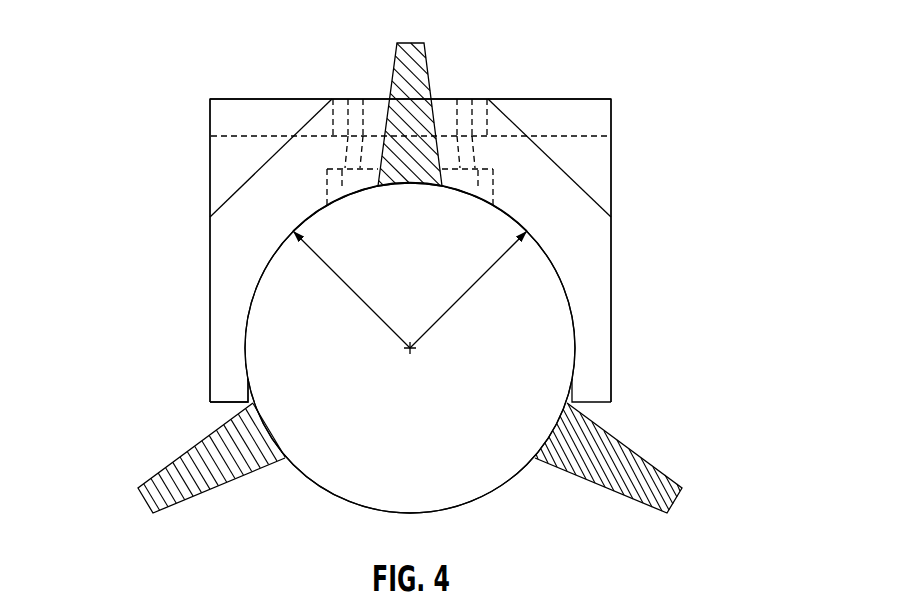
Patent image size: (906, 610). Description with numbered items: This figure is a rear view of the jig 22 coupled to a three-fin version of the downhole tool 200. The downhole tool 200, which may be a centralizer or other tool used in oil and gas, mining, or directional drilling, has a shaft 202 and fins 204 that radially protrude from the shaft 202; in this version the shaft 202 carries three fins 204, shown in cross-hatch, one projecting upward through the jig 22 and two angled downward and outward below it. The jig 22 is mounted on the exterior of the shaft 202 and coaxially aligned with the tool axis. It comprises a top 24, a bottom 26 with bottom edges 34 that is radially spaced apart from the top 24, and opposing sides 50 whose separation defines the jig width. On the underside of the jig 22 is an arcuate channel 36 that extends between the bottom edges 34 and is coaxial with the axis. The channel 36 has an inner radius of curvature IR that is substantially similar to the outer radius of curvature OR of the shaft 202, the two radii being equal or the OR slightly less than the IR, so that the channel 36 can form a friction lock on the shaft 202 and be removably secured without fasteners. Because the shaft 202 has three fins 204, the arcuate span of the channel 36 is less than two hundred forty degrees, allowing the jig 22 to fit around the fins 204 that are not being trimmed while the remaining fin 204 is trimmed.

The jig 22 is at (624, 163).
The top 24 is at (250, 97).
The bottom 26 is at (208, 400).
The bottom edges 34 is at (217, 405).
The channel 36 is at (510, 215).
The opposing sides 50 is at (209, 165).
The downhole tool 200 is at (350, 506).
The shaft 202 is at (455, 507).
The fins 204 is at (410, 43).
The outer radius of curvature OR is at (318, 252).
The inner radius of curvature IR is at (475, 280).